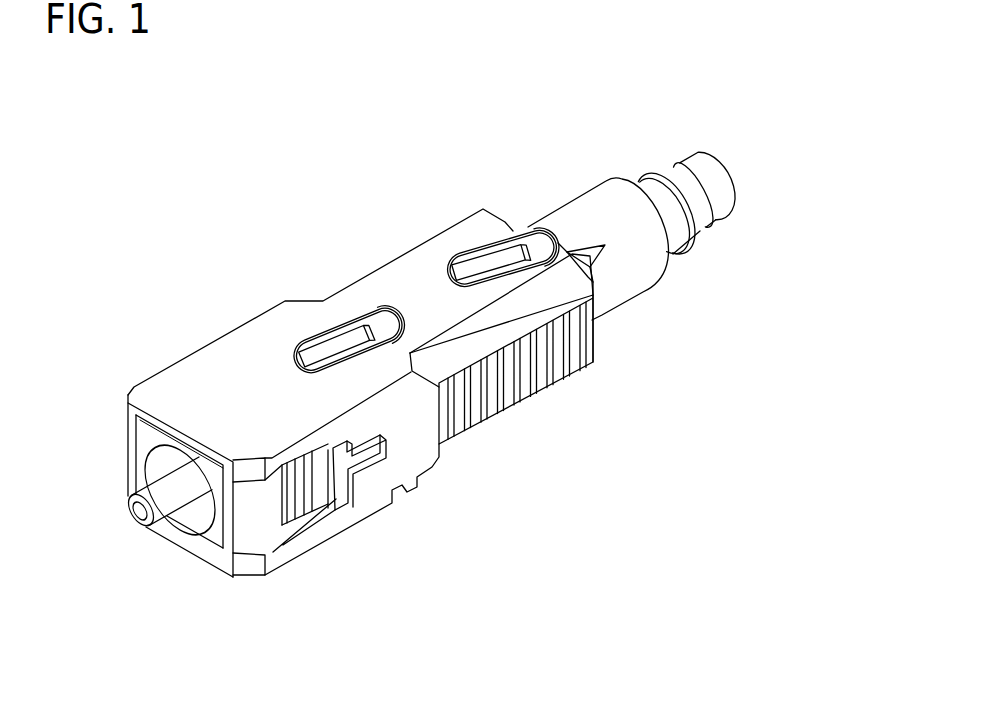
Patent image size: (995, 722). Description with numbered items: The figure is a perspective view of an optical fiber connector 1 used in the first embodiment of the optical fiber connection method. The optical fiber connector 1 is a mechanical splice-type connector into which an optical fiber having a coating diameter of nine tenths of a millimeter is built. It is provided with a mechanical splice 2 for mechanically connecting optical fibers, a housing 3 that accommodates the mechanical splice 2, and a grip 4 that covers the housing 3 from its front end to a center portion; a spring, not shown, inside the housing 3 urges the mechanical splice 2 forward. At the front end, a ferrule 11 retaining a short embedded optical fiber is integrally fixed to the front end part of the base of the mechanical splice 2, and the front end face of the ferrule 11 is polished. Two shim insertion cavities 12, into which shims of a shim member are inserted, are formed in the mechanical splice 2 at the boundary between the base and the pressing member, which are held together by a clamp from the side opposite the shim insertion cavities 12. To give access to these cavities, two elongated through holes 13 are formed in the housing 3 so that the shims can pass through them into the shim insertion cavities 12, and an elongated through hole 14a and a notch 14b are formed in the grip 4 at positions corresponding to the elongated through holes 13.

The optical fiber connector 1 is at (247, 167).
The mechanical splice 2 is at (533, 244).
The housing 3 is at (618, 277).
The grip 4 is at (370, 498).
The ferrule 11 is at (172, 502).
The shim insertion cavities 12 is at (330, 347).
The elongated through holes 13 is at (385, 320).
The elongated through hole 14a is at (345, 355).
The notch 14b is at (500, 272).